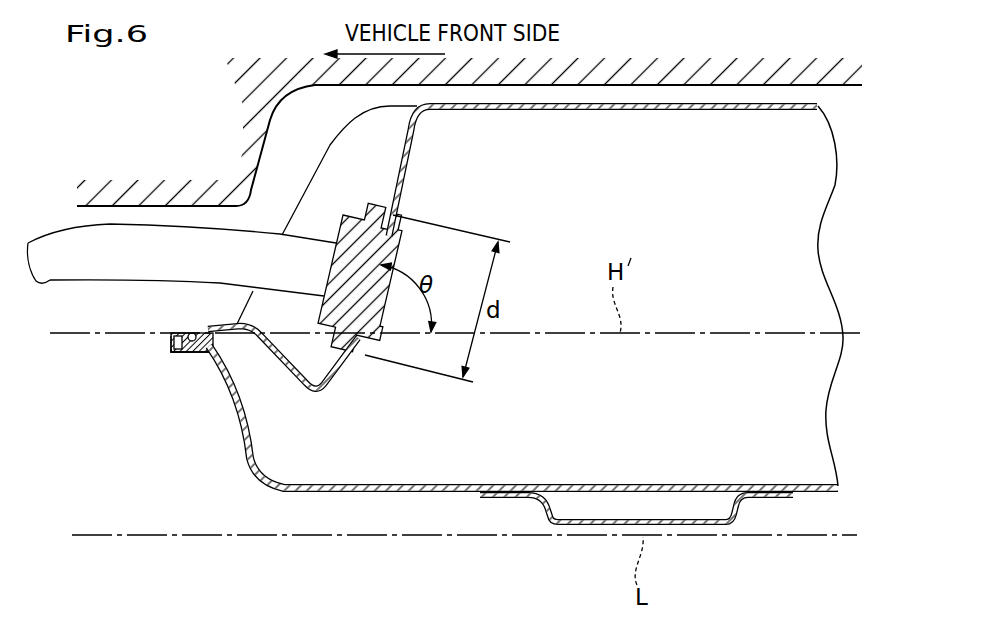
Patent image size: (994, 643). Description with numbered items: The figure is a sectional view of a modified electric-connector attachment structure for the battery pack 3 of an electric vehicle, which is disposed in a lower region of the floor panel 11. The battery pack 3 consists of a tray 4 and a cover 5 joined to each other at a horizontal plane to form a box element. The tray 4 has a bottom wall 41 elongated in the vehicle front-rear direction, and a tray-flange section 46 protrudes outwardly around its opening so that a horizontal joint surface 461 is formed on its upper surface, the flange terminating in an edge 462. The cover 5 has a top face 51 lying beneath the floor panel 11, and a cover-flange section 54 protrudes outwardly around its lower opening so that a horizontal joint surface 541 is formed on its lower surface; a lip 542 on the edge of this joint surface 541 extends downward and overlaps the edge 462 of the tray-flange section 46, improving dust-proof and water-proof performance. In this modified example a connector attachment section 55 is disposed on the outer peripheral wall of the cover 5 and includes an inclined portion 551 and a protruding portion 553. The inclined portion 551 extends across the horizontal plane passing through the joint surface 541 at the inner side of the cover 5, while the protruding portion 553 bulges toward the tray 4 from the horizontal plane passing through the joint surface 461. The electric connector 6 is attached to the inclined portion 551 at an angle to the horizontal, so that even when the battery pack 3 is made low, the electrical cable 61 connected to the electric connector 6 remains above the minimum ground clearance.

The battery pack 3 is at (295, 174).
The tray 4 is at (456, 457).
The cover 5 is at (603, 125).
The electric connector 6 is at (320, 305).
The floor panel 11 is at (683, 86).
The bottom wall 41 is at (570, 483).
The tray-flange section 46 is at (144, 387).
The top face 51 is at (643, 102).
The cover-flange section 54 is at (144, 324).
The connector attachment section 55 is at (339, 389).
The electrical cable 61 is at (60, 240).
The horizontal joint surface 461 is at (203, 353).
The edge 462 is at (170, 351).
The horizontal joint surface 541 is at (200, 332).
The lip 542 is at (172, 340).
The inclined portion 551 is at (348, 364).
The protruding portion 553 is at (328, 386).